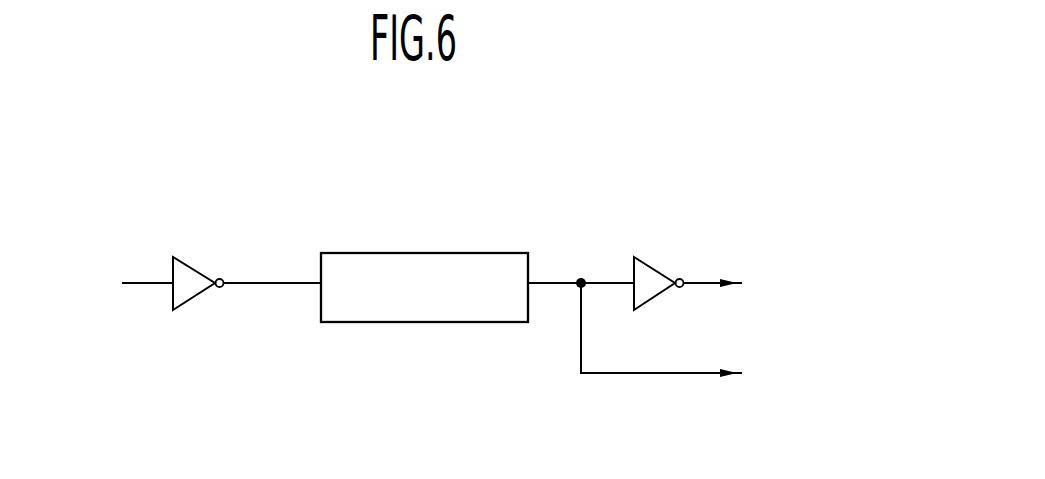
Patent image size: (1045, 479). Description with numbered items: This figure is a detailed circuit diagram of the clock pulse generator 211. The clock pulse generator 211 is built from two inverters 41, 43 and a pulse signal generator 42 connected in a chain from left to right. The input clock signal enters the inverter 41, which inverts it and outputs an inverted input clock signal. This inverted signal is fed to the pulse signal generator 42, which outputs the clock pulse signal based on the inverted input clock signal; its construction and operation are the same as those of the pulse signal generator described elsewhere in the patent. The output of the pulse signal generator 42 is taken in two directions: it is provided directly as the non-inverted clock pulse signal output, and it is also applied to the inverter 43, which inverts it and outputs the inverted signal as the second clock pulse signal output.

The clock pulse generator 211 is at (653, 146).
The inverter 41 is at (192, 257).
The pulse signal generator 42 is at (435, 253).
The inverter 43 is at (652, 257).